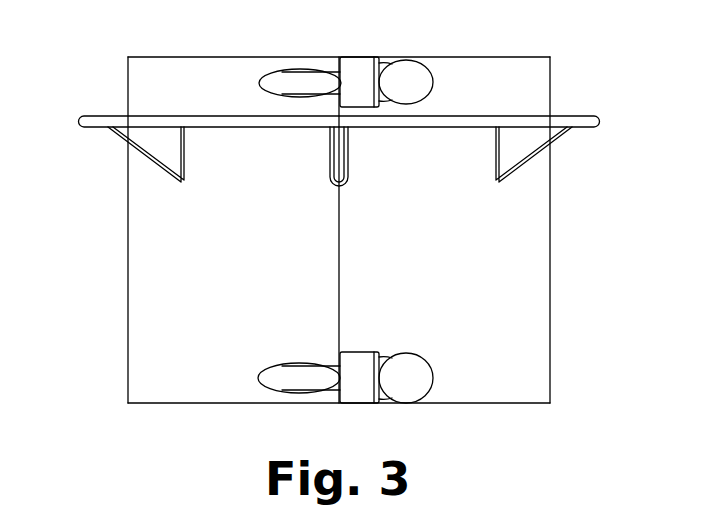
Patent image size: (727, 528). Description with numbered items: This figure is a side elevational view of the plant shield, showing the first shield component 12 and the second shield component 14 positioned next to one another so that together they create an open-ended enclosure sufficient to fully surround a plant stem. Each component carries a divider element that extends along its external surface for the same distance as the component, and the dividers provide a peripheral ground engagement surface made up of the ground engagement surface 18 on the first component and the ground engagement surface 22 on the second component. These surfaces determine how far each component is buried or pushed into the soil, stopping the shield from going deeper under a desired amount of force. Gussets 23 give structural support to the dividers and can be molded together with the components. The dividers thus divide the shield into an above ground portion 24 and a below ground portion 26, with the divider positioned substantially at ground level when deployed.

The first shield component 12 is at (182, 334).
The second shield component 14 is at (513, 302).
The ground engagement surface 18 is at (95, 136).
The ground engagement surface 22 is at (588, 137).
The gussets 23 is at (157, 142).
The above ground portion 24 is at (111, 80).
The below ground portion 26 is at (110, 256).